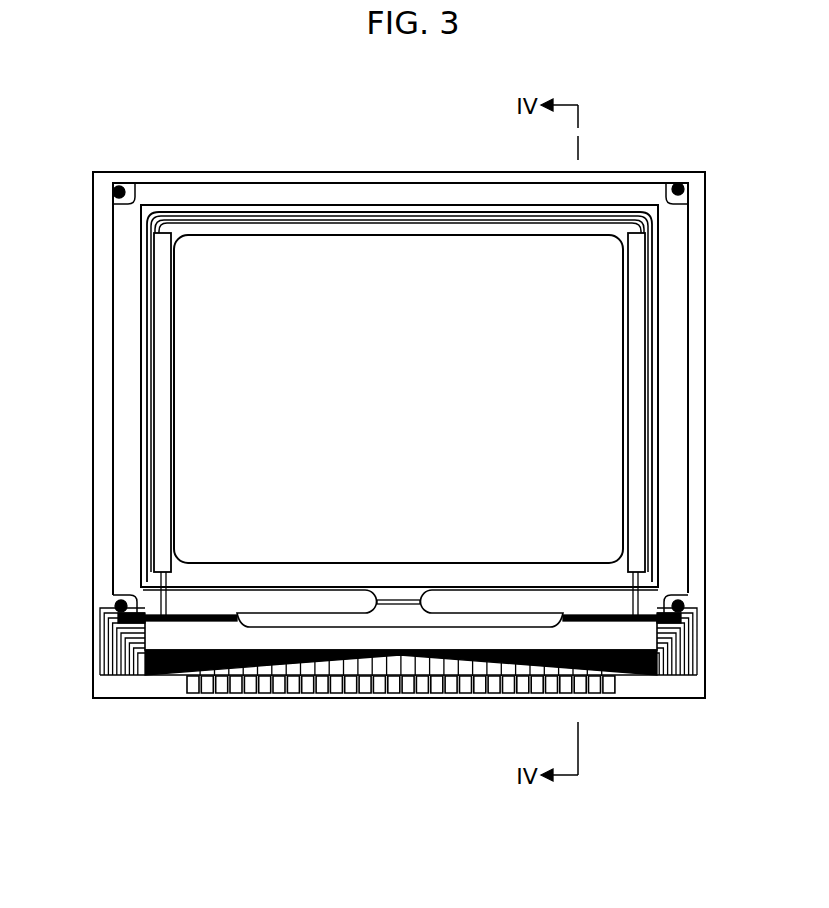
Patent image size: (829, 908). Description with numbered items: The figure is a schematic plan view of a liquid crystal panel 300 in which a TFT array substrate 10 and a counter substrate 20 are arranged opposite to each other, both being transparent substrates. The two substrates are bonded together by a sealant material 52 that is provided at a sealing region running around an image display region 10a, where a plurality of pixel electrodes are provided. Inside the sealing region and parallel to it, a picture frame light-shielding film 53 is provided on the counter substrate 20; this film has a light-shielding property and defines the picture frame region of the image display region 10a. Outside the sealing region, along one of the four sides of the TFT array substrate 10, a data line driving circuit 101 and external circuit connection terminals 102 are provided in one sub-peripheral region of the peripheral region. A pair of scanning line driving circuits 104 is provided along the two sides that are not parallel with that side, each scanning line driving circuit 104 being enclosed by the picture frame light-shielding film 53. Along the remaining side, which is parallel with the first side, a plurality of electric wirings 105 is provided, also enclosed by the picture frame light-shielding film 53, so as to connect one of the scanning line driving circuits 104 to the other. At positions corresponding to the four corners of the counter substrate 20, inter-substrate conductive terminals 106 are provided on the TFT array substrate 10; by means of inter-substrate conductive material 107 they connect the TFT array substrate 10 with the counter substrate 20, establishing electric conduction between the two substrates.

The liquid crystal panel 300 is at (668, 116).
The TFT array substrate 10 is at (222, 176).
The image display region 10a is at (573, 384).
The counter substrate 20 is at (424, 190).
The sealant material 52 is at (680, 327).
The picture frame light-shielding film 53 is at (517, 568).
The data line driving circuit 101 is at (167, 645).
The external circuit connection terminals 102 is at (325, 684).
The scanning line driving circuits 104 is at (160, 296).
The electric wirings 105 is at (307, 220).
The inter-substrate conductive terminals 106 is at (114, 194).
The inter-substrate conductive material 107 is at (698, 614).